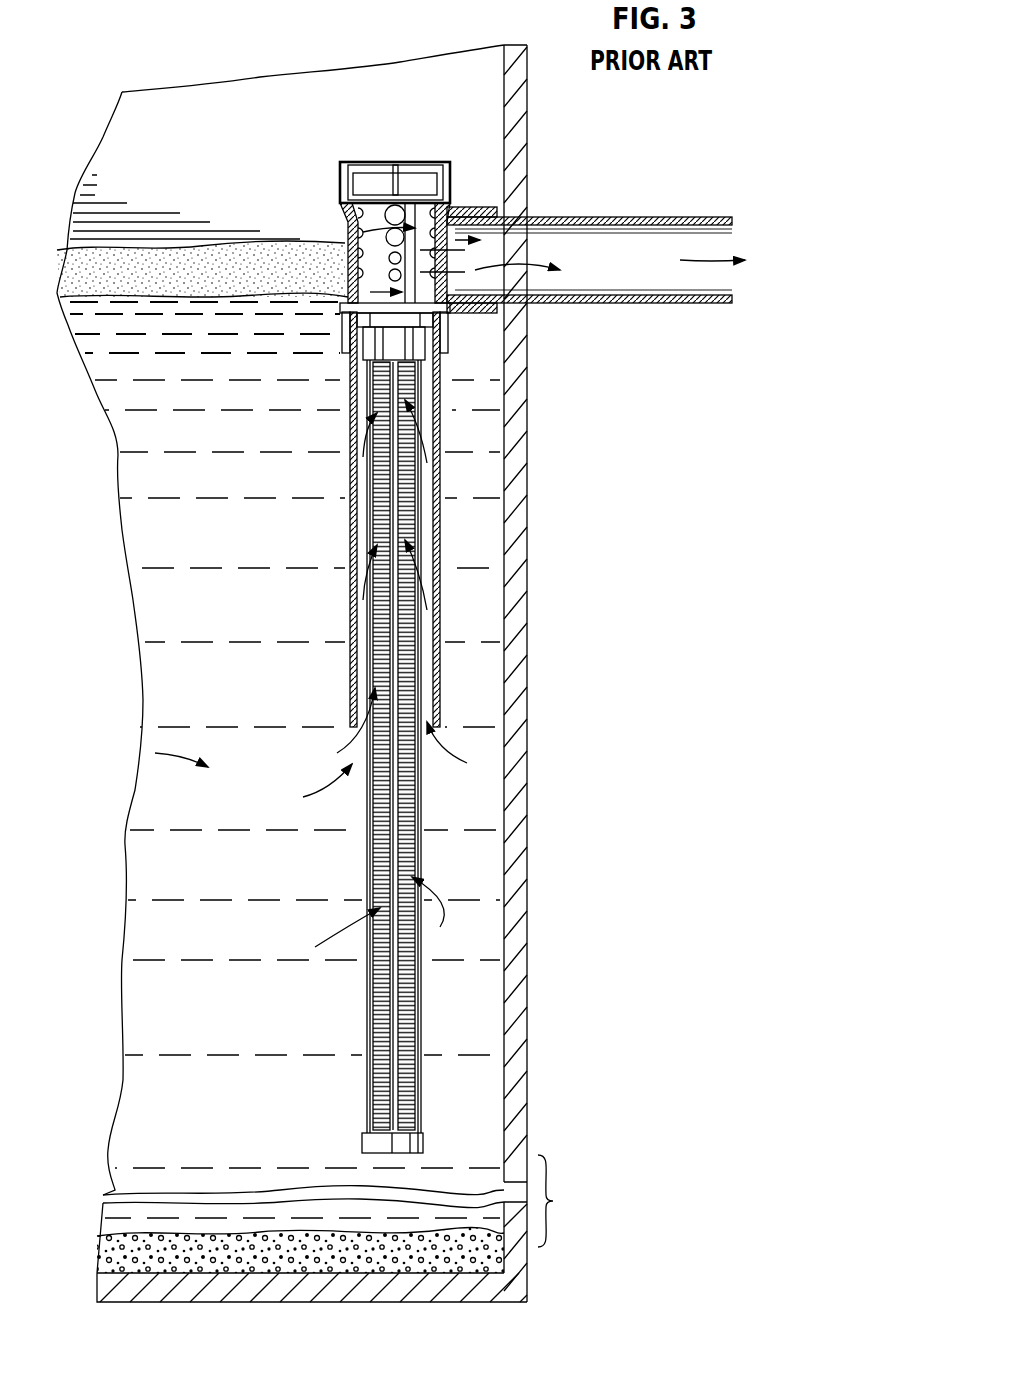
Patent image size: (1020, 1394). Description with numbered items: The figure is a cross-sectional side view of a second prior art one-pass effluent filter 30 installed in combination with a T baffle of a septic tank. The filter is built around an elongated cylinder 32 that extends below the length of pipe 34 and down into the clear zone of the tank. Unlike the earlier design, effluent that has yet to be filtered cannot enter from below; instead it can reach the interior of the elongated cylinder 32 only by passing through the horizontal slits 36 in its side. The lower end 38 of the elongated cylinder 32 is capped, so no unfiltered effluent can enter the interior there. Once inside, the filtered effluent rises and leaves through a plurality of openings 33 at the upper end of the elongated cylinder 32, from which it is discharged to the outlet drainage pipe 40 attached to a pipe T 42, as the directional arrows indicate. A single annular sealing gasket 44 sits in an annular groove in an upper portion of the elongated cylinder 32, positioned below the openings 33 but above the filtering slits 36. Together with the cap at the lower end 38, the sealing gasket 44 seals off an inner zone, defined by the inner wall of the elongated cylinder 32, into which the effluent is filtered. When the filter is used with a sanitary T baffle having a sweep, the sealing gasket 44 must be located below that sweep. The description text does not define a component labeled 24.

The pipe fitting 24 is at (470, 309).
The effluent filter 30 is at (321, 746).
The elongated cylinder 32 is at (400, 991).
The openings 33 is at (384, 222).
The pipe 34 is at (437, 620).
The horizontal slits 36 is at (377, 485).
The lower end 38 is at (404, 1155).
The outlet drainage pipe 40 is at (652, 217).
The pipe T 42 is at (350, 233).
The annular sealing gasket 44 is at (380, 322).